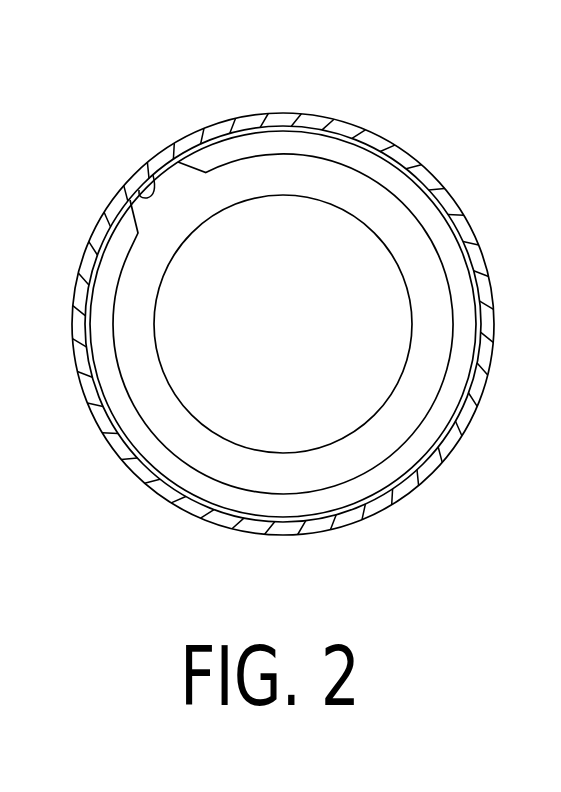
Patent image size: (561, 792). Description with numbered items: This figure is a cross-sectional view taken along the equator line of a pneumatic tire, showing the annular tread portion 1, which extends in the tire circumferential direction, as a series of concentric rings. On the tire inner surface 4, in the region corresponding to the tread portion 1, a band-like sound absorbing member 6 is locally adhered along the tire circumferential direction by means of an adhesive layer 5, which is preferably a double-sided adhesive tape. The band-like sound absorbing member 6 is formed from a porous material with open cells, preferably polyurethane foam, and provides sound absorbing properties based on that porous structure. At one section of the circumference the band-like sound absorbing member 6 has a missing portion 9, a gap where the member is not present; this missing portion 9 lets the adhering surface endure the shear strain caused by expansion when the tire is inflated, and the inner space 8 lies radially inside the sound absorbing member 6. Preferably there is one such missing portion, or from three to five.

The tread portion 1 is at (373, 143).
The tire inner surface 4 is at (140, 167).
The adhesive layer 5 is at (222, 120).
The band-like sound absorbing member 6 is at (295, 140).
The inner ring 8 is at (403, 233).
The missing portion 9 is at (172, 193).